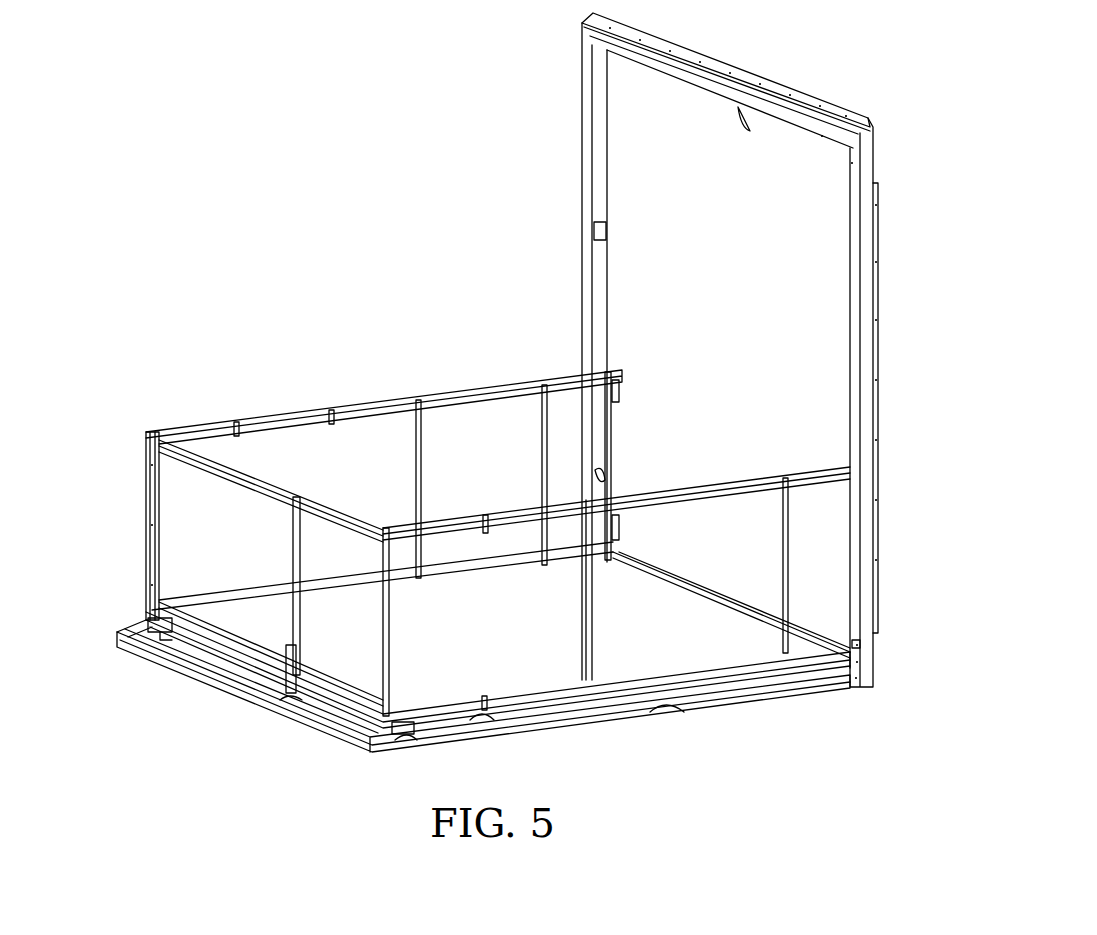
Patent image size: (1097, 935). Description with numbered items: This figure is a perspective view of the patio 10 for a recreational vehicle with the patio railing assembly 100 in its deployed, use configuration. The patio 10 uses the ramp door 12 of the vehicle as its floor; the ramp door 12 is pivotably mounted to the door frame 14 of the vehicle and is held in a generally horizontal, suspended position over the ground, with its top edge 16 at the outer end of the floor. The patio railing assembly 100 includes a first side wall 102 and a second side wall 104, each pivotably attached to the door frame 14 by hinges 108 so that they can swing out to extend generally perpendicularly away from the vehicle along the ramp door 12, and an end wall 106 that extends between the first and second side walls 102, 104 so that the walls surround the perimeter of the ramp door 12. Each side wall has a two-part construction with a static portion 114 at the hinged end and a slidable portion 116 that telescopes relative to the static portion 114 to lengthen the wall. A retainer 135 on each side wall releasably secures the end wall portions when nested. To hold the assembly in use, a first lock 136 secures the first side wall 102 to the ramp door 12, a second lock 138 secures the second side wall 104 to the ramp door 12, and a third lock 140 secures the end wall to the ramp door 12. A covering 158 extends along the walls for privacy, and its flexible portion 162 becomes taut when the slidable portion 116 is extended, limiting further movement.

The patio 10 is at (276, 309).
The patio railing assembly 100 is at (131, 379).
The ramp door 12 is at (713, 678).
The door frame 14 is at (868, 305).
The top edge 16 is at (210, 667).
The first side wall 102 is at (414, 400).
The second side wall 104 is at (742, 482).
The end wall 106 is at (235, 475).
The hinges 108 is at (618, 392).
The static portion 114 is at (562, 385).
The slidable portion 116 is at (355, 412).
The retainer 135 is at (330, 595).
The first lock 136 is at (155, 630).
The second lock 138 is at (395, 725).
The third lock 140 is at (287, 690).
The covering 158 is at (180, 490).
The flexible portion 162 is at (557, 400).